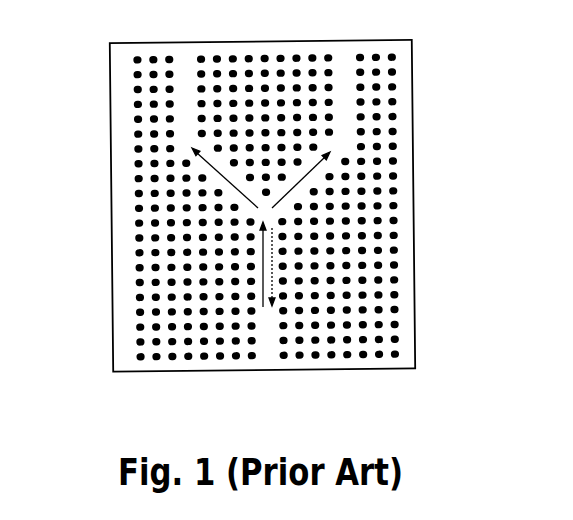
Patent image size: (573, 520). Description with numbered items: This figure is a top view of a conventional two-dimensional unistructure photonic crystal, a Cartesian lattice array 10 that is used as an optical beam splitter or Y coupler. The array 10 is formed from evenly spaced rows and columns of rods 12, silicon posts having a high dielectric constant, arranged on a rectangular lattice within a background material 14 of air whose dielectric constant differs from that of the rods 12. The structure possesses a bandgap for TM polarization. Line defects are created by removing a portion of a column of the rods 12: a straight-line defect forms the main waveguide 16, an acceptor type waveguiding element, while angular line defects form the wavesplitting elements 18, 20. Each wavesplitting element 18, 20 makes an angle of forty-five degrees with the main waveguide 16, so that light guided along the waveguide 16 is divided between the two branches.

The Cartesian lattice array photonic crystal 10 is at (280, 227).
The rods 12 is at (400, 103).
The background material 14 is at (400, 148).
The main waveguide 16 is at (275, 350).
The wavesplitting element 18 is at (225, 181).
The wavesplitting element 20 is at (280, 197).